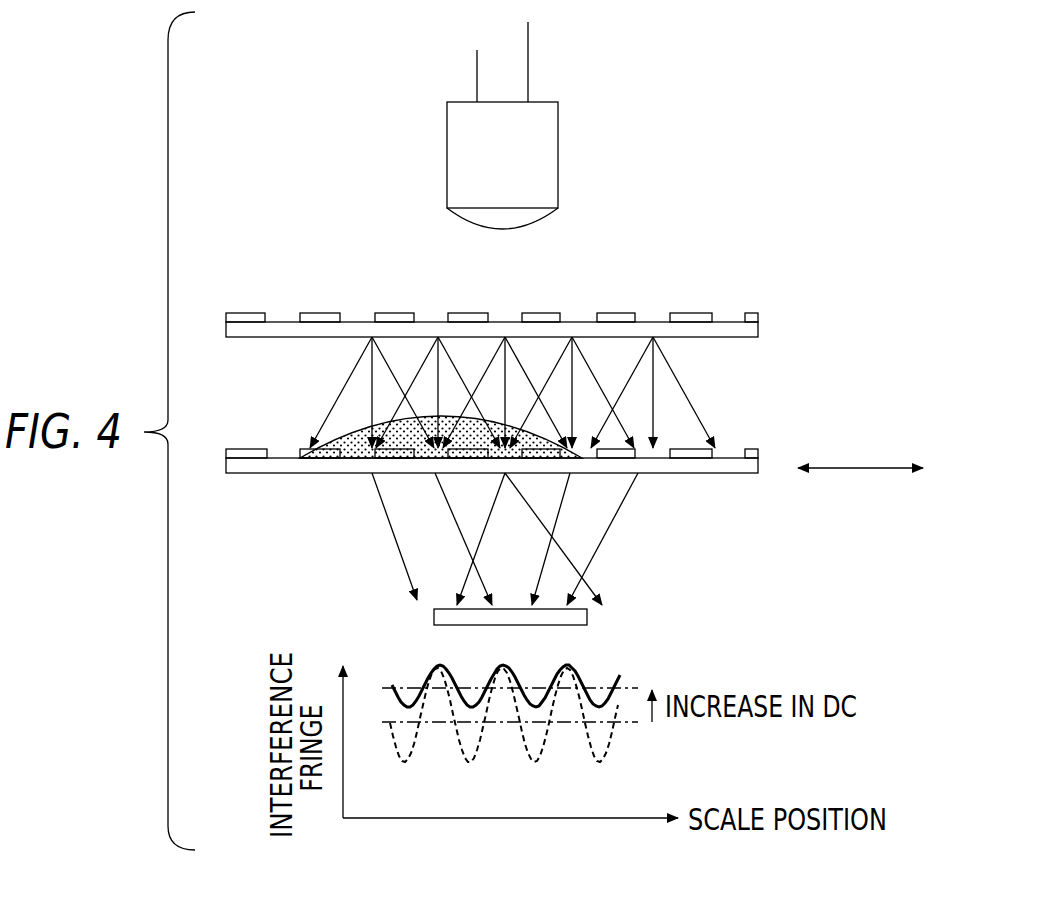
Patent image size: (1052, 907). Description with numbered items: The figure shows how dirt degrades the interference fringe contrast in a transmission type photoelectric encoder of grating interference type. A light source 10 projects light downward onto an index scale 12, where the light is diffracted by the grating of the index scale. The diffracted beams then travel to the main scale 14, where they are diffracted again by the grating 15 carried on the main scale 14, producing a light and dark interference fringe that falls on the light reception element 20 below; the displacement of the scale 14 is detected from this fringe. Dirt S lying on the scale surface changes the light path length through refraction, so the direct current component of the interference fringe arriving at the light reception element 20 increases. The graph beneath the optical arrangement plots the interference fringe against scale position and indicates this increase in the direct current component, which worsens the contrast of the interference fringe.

The light source 10 is at (558, 163).
The index scale 12 is at (760, 333).
The main scale 14 is at (745, 473).
The grating 15 is at (251, 449).
The light reception element 20 is at (590, 621).
The dirt S is at (362, 427).